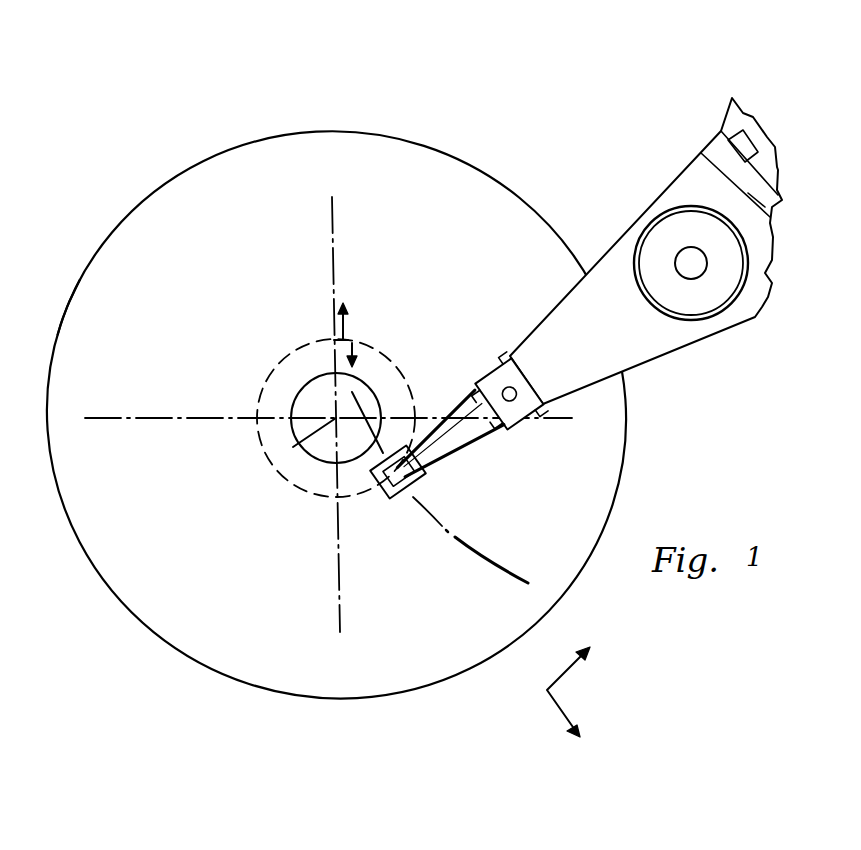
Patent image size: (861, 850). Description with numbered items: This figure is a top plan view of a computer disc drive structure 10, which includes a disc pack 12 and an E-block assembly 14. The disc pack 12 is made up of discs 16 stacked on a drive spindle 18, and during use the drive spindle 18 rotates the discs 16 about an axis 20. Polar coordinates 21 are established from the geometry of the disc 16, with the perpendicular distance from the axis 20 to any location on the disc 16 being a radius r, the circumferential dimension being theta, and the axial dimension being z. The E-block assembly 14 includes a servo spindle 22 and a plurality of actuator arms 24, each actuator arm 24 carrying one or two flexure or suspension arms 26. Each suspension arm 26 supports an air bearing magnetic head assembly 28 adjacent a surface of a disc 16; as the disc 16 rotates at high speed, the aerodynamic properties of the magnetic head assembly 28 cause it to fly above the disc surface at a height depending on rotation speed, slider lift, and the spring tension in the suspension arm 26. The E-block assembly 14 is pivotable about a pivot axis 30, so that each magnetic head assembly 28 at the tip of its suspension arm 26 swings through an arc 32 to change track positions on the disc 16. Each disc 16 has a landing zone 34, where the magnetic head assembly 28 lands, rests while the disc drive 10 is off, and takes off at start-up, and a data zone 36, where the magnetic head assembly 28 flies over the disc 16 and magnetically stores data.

The disc drive structure 10 is at (458, 100).
The disc pack 12 is at (114, 216).
The E-block assembly 14 is at (595, 196).
The disc 16 is at (92, 312).
The drive spindle 18 is at (303, 402).
The axis 20 is at (295, 446).
The polar coordinates 21 is at (547, 690).
The servo spindle 22 is at (688, 303).
The actuator arm 24 is at (630, 345).
The suspension arm 26 is at (454, 441).
The air bearing magnetic head assembly 28 is at (386, 497).
The pivot axis 30 is at (693, 265).
The arc 32 is at (477, 552).
The landing zone 34 is at (365, 360).
The data zone 36 is at (359, 320).